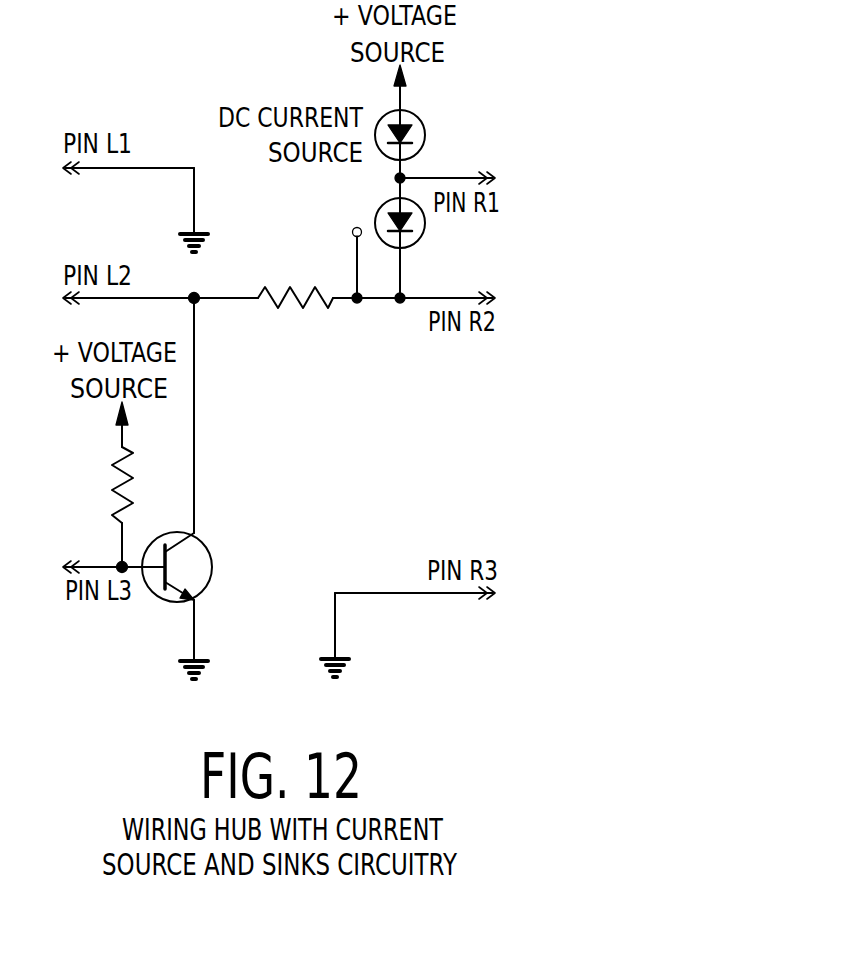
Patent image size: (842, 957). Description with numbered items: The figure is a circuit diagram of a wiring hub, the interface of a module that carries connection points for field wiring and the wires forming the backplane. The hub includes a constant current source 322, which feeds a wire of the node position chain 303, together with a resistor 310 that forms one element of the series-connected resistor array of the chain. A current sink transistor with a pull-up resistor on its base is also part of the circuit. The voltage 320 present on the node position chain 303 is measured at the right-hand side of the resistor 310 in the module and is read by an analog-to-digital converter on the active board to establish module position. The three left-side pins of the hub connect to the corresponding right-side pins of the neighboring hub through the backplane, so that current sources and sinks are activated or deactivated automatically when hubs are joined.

The node position chain 303 is at (438, 297).
The resistor 310 is at (308, 303).
The voltage V4 320 is at (353, 228).
The current source 322 is at (425, 130).